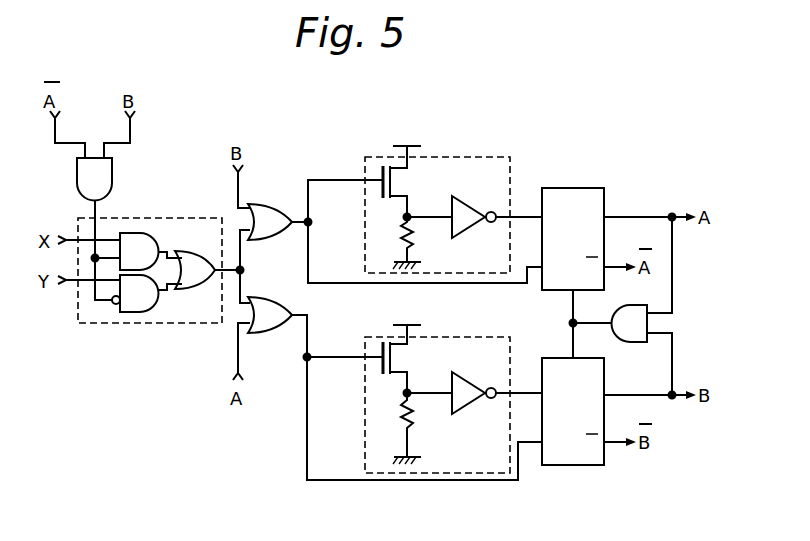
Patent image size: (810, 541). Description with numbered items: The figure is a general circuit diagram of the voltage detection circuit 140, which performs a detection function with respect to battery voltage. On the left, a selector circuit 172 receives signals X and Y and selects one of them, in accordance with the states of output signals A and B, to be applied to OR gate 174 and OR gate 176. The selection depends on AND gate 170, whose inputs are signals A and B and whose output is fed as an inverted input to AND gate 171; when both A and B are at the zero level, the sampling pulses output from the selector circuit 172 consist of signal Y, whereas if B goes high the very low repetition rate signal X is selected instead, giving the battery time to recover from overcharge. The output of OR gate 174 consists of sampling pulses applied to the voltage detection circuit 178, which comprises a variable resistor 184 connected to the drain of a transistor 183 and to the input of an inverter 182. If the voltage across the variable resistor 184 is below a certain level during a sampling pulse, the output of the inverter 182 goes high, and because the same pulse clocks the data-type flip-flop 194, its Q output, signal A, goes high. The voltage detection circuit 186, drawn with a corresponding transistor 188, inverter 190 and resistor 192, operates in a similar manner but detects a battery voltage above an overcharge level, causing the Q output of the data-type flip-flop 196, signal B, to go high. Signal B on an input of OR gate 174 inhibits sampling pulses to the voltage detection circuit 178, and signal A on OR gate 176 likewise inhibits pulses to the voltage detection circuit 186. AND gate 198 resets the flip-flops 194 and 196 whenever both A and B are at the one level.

The voltage detection circuit 140 is at (362, 114).
The AND gate 170 is at (107, 171).
The AND gate 171 is at (142, 314).
The selector circuit 172 is at (163, 218).
The OR gate 174 is at (270, 204).
The OR gate 176 is at (270, 333).
The voltage detection circuit 178 is at (500, 157).
The inverter 182 is at (466, 204).
The transistor 183 is at (396, 183).
The variable resistor 184 is at (414, 233).
The voltage detection circuit 186 is at (462, 338).
The transistor 188 is at (396, 360).
The inverter 190 is at (472, 380).
The resistor 192 is at (413, 415).
The data-type flip-flop 194 is at (576, 188).
The data-type flip-flop 196 is at (571, 465).
The AND gate 198 is at (636, 343).